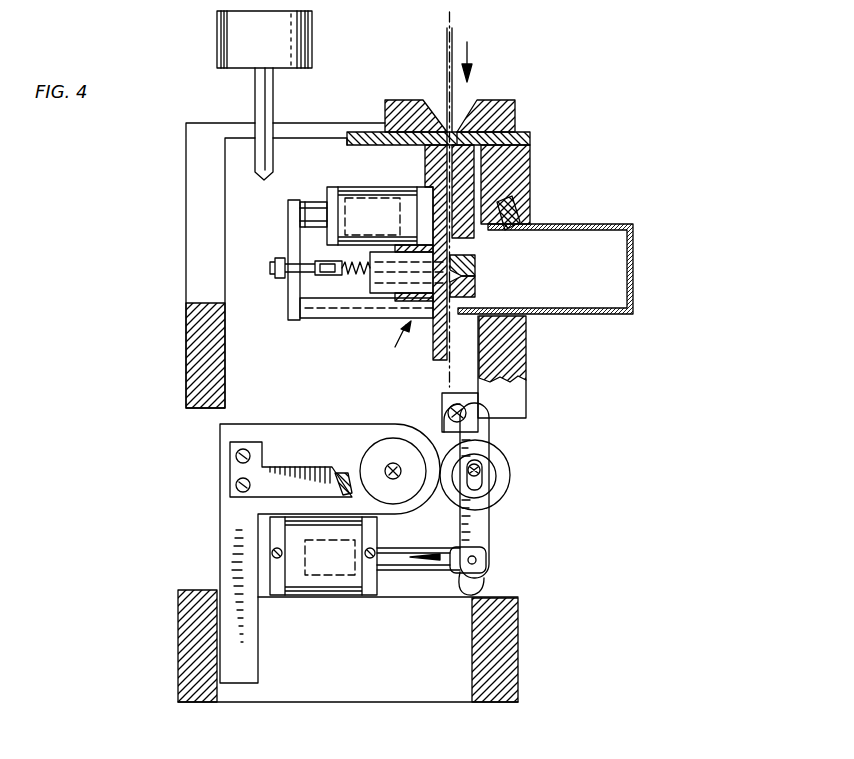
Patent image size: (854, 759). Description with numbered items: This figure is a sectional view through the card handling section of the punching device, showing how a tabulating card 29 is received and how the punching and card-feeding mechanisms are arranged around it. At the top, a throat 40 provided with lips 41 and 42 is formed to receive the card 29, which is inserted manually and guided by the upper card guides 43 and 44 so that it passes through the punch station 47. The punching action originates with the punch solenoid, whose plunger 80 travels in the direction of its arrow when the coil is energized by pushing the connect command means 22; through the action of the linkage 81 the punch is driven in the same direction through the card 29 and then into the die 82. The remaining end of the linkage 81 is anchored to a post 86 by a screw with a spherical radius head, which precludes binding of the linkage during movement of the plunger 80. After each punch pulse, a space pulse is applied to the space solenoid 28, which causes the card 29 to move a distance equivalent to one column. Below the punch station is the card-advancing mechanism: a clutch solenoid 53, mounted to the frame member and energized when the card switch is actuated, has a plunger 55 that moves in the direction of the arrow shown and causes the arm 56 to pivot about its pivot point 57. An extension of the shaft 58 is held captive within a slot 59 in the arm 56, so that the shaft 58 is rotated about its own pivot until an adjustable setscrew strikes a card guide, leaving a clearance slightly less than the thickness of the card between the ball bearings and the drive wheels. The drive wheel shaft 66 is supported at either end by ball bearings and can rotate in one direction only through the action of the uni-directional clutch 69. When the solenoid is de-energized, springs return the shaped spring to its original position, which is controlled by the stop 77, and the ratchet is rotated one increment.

The command means 22 is at (316, 38).
The card 29 is at (456, 30).
The throat 40 is at (457, 107).
The lip 41 is at (436, 106).
The lip 42 is at (466, 108).
The upper card guide 43 is at (425, 177).
The space solenoid 28 is at (349, 191).
The plunger 80 is at (318, 202).
The linkage 81 is at (289, 232).
The upper card guide 44 is at (472, 236).
The die 82 is at (483, 262).
The post 86 is at (345, 318).
The punch station 47 is at (394, 343).
The pivot point 57 is at (447, 406).
The uni-directional clutch 69 is at (394, 440).
The stop 77 is at (345, 472).
The drive wheel shaft 66 is at (399, 479).
The slot 59 is at (482, 470).
The shaft 58 is at (484, 480).
The arm 56 is at (490, 522).
The clutch solenoid 53 is at (395, 580).
The plunger 55 is at (480, 593).